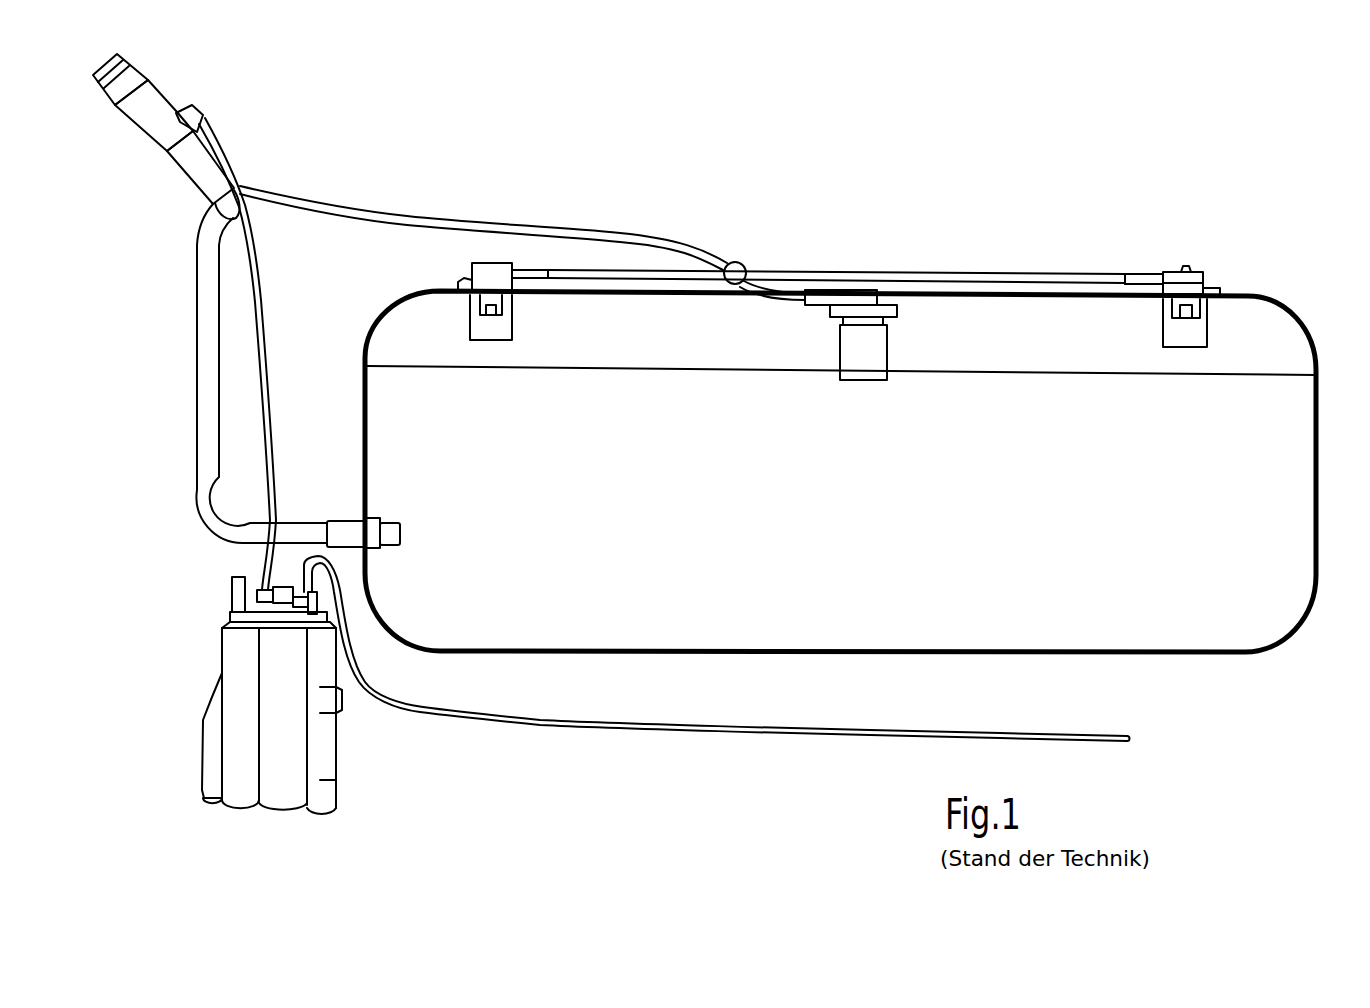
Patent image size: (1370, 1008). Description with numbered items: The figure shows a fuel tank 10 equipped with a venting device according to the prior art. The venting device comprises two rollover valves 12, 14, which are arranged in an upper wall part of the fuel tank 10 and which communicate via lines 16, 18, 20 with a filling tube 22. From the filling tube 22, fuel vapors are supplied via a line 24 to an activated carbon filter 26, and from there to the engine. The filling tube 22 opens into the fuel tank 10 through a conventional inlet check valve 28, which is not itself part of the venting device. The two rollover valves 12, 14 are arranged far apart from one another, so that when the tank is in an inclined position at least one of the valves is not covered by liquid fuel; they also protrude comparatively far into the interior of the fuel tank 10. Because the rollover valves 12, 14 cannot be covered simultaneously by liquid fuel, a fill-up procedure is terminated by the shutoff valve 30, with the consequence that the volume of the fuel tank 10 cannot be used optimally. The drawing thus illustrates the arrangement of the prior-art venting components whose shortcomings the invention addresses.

The fuel tank 10 is at (1300, 323).
The rollover valve 12 is at (1187, 267).
The rollover valve 14 is at (497, 263).
The line 16 is at (987, 272).
The line 18 is at (612, 270).
The line 20 is at (690, 250).
The filling tube 22 is at (186, 170).
The line 24 is at (268, 343).
The activated carbon filter 26 is at (211, 686).
The inlet check valve 28 is at (372, 537).
The shutoff valve 30 is at (860, 300).